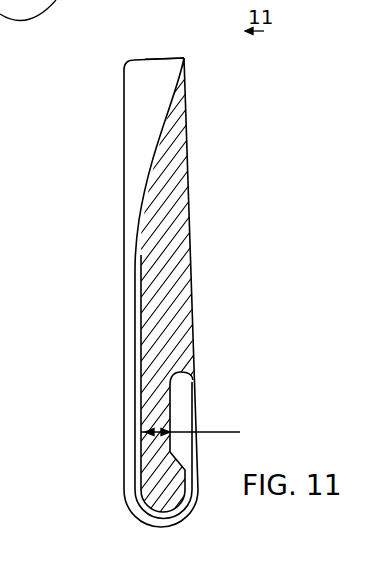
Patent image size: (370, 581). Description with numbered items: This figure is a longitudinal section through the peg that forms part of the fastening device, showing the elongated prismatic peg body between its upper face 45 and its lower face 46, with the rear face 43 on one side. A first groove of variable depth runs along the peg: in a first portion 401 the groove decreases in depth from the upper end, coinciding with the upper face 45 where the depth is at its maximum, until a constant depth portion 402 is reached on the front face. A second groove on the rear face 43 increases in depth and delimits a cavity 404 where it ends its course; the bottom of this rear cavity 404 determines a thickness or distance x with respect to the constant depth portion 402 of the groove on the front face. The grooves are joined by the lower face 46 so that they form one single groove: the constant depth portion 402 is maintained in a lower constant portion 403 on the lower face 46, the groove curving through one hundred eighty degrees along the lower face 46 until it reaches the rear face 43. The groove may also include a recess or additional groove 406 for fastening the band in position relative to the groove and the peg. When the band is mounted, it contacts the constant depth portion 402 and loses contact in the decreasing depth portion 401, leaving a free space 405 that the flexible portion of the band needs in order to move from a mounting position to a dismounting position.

The rear face 43 is at (190, 282).
The upper face 45 is at (152, 57).
The lower face 46 is at (162, 526).
The first portion 401 is at (135, 150).
The constant depth portion 402 is at (137, 270).
The lower constant portion 403 is at (142, 516).
The cavity 404 is at (192, 395).
The free space 405 is at (143, 103).
The recess 406 is at (150, 432).